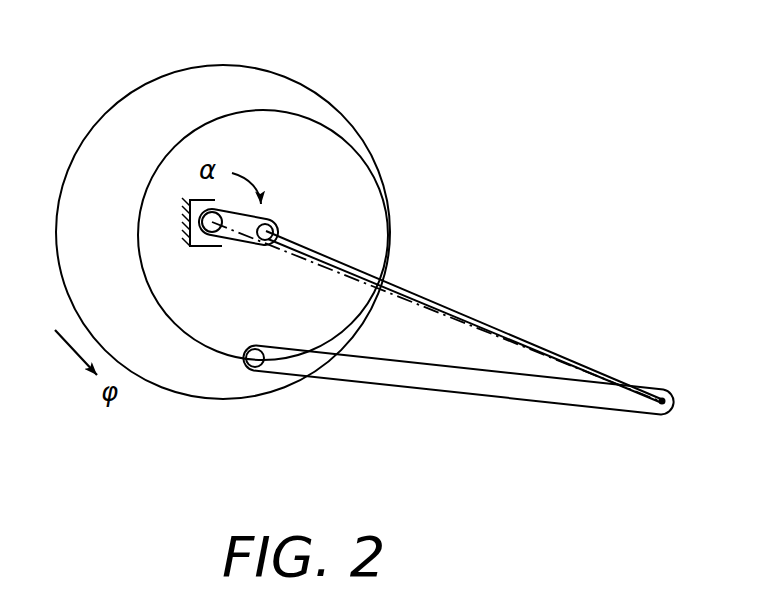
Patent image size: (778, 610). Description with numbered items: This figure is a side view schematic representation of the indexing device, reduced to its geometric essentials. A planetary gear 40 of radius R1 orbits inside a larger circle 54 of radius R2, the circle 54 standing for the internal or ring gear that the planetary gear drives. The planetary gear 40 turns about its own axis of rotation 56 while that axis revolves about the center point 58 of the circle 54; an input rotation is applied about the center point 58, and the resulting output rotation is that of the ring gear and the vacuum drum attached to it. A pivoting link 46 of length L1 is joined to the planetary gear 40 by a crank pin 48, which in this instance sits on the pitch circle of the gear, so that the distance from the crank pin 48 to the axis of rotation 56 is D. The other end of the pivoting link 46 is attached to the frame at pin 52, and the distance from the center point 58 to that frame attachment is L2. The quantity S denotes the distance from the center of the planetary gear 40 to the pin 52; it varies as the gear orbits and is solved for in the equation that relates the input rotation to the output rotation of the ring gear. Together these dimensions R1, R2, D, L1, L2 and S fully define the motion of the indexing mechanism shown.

The planetary gear 40 is at (350, 163).
The pivoting link 46 is at (413, 375).
The crank pin 48 is at (258, 367).
The pin 52 is at (662, 393).
The circle 54 is at (270, 74).
The axis of rotation 56 is at (270, 222).
The center point 58 is at (213, 247).
The distance from center of planetary gear to pin S is at (420, 292).
The radius of the planetary gear R1 is at (377, 184).
The radius of circle R2 is at (212, 222).
The distance between crank pin and axis of rotation D is at (258, 242).
The length of pivoting link L1 is at (474, 346).
The distance between center point and frame attachment L2 is at (453, 314).